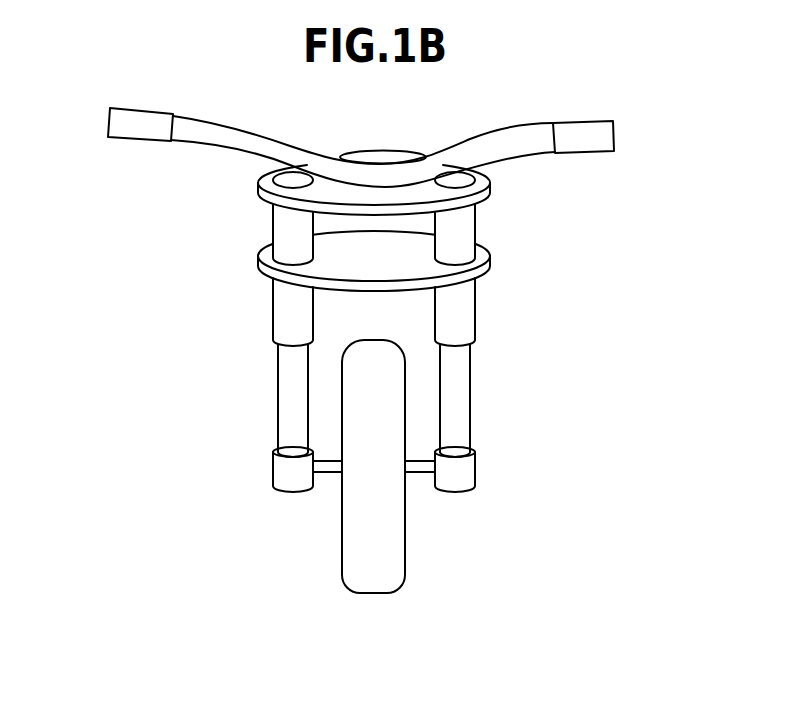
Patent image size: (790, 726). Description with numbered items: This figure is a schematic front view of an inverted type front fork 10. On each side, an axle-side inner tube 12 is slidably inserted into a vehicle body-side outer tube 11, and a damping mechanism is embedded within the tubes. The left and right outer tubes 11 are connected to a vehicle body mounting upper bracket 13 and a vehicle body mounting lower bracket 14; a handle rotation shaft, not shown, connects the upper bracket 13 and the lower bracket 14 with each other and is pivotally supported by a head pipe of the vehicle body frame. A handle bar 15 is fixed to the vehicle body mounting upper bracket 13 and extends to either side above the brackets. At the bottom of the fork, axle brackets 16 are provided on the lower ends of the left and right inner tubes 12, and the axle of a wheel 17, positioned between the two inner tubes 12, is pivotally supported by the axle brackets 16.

The front fork 10 is at (221, 256).
The outer tube 11 is at (283, 220).
The inner tube 12 is at (283, 398).
The vehicle body mounting upper bracket 13 is at (484, 178).
The vehicle body mounting lower bracket 14 is at (484, 254).
The handle bar 15 is at (205, 120).
The axle bracket 16 is at (277, 472).
The wheel 17 is at (348, 546).